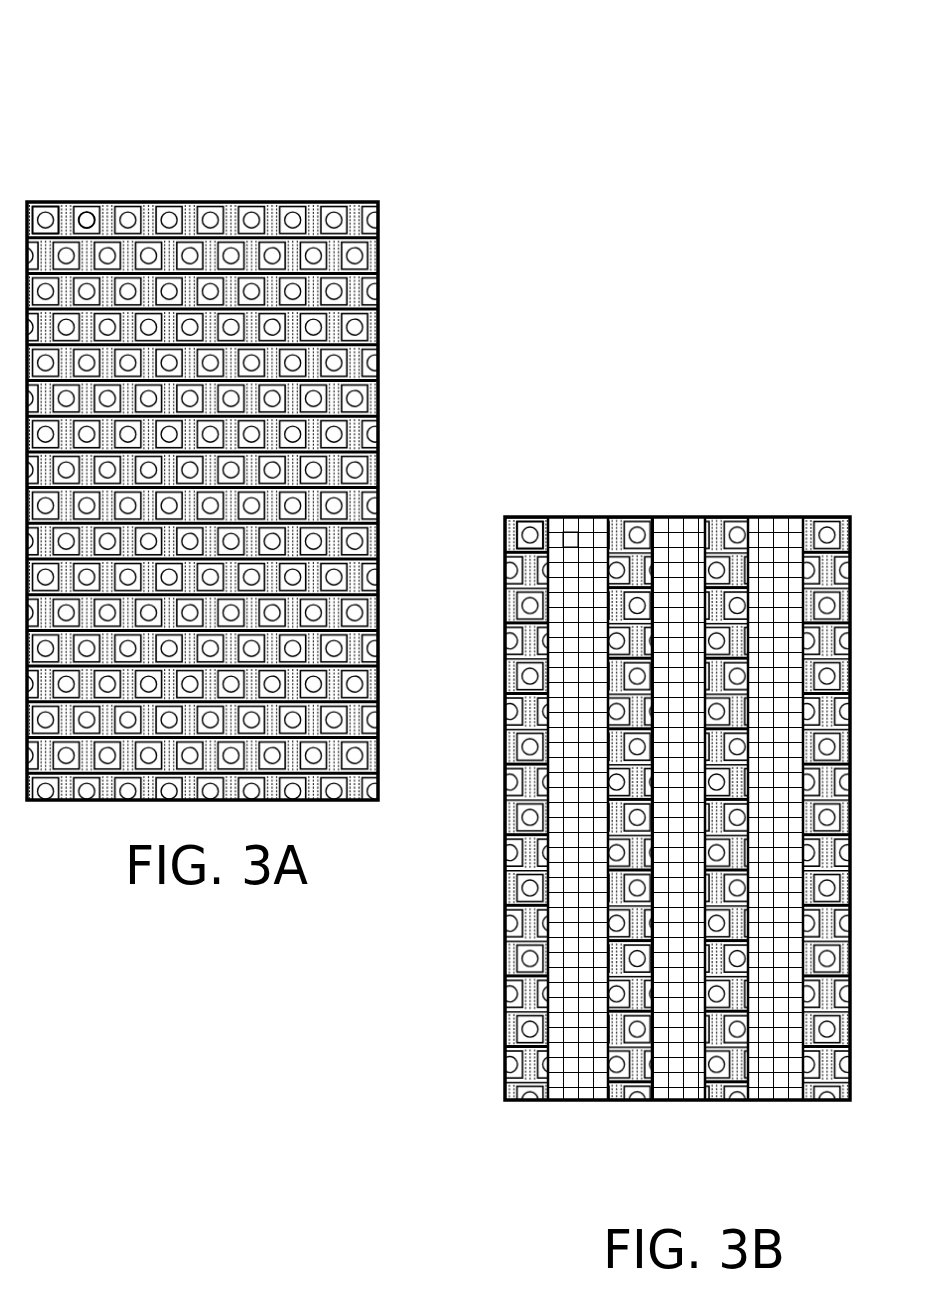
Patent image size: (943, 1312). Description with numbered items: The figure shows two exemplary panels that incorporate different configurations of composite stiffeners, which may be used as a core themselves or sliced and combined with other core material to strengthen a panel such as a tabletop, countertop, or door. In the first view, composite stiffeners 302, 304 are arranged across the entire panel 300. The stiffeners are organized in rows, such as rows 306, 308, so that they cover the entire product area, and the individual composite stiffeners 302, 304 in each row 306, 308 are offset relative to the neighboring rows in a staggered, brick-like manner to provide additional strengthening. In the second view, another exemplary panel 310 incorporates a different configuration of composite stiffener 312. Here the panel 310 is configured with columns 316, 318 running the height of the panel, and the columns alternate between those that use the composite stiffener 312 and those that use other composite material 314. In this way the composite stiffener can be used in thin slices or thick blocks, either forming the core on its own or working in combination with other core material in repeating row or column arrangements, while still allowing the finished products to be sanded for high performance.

In FIG. 3A, the panel 300 is at (204, 65).
In FIG. 3A, the composite stiffener 302 is at (47, 218).
In FIG. 3A, the composite stiffener 304 is at (95, 217).
In FIG. 3A, the row 306 is at (430, 219).
In FIG. 3A, the row 308 is at (428, 258).
In FIG. 3B, the panel 310 is at (694, 366).
In FIG. 3B, the composite stiffener 312 is at (528, 535).
In FIG. 3B, the composite material 314 is at (575, 533).
In FIG. 3B, the column 316 is at (528, 1140).
In FIG. 3B, the column 318 is at (580, 1139).